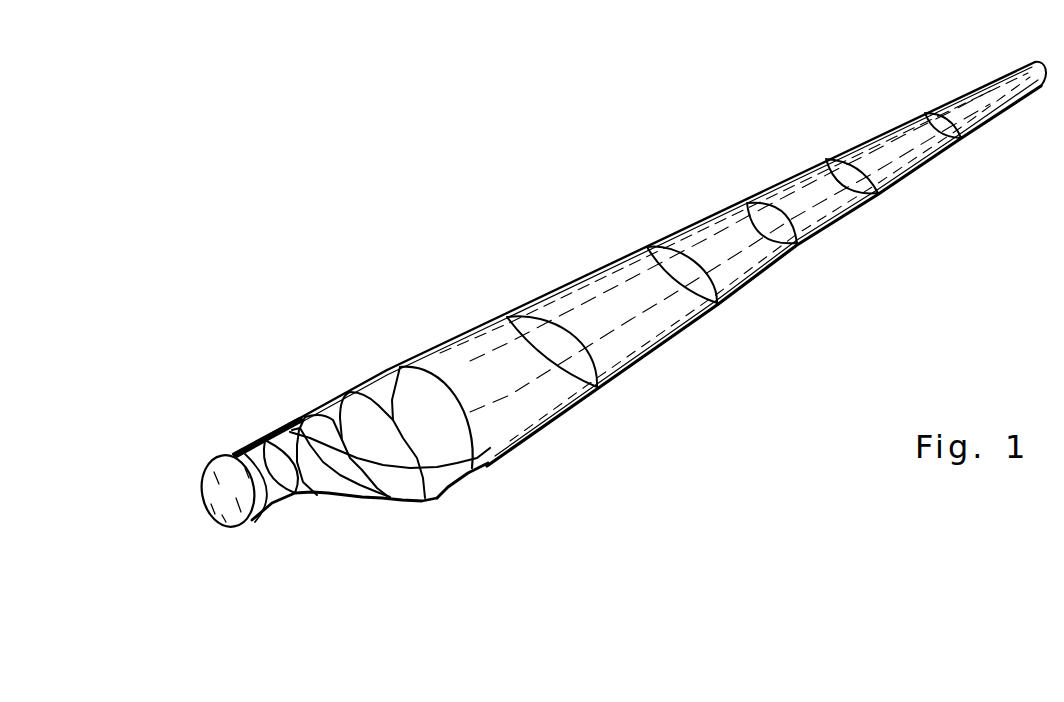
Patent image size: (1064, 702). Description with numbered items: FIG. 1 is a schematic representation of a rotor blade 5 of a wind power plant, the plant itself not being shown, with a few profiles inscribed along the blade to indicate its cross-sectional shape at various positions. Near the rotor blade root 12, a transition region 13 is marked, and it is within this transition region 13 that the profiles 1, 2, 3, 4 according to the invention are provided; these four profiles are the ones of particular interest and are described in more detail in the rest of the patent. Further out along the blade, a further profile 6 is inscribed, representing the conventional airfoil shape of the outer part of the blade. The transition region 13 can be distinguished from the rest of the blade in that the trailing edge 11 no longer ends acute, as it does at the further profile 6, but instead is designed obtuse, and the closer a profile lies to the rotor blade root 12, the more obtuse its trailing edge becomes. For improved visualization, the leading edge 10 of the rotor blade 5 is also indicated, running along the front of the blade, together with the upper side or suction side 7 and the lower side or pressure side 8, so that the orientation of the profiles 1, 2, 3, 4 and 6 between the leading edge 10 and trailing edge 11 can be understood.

The profile 1 is at (345, 398).
The profile 2 is at (398, 368).
The profile 3 is at (307, 413).
The profile 4 is at (263, 437).
The rotor blade 5 is at (627, 285).
The profile 6 is at (552, 315).
The suction side 7 is at (720, 243).
The pressure side 8 is at (707, 323).
The leading edge 10 is at (400, 367).
The trailing edge 11 is at (487, 467).
The rotor blade root 12 is at (207, 483).
The transition region 13 is at (459, 200).